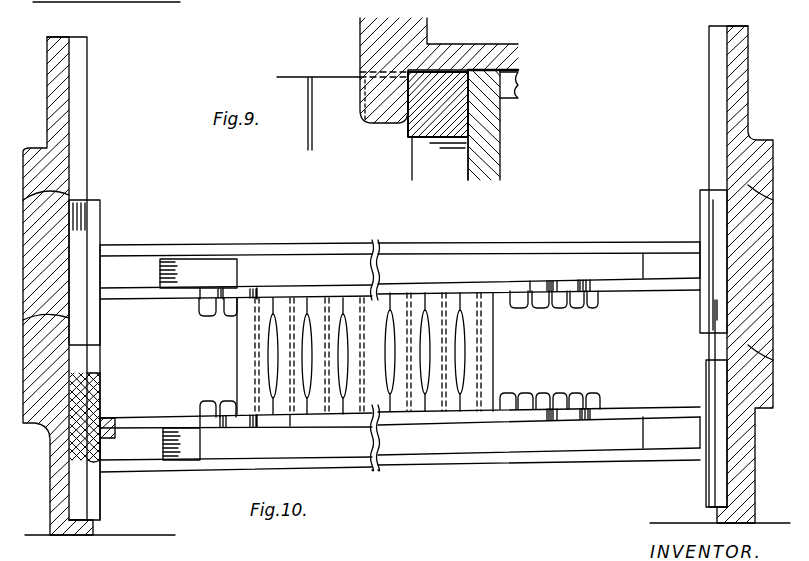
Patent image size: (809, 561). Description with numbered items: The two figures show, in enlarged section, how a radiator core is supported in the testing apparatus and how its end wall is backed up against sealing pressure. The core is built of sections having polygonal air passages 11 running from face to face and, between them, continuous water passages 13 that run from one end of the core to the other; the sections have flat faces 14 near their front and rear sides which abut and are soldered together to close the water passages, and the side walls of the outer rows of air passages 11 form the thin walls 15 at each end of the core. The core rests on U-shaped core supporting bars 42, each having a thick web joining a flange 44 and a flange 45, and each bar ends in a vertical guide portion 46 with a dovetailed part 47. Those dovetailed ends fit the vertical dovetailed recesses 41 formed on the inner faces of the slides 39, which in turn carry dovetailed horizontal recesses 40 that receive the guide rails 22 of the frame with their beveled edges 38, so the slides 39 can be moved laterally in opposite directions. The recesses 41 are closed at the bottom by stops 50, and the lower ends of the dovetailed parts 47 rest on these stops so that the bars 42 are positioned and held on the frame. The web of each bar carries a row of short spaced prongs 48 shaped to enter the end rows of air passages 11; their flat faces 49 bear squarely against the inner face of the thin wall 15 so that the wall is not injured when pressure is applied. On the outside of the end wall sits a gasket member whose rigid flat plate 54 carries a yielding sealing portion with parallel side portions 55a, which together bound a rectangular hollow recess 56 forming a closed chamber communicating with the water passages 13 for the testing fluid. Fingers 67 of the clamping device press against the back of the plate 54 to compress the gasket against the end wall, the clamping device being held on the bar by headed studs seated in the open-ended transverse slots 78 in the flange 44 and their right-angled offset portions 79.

In FIG. 9, the air passages 11 is at (339, 115).
In FIG. 10, the water passages 13 is at (307, 357).
In FIG. 10, the flat faces 14 is at (315, 300).
In FIG. 9, the thin walls 15 is at (412, 152).
In FIG. 10, the thin walls 15 is at (465, 422).
In FIG. 10, the guide rails 22 is at (85, 205).
In FIG. 10, the beveled edges 38 is at (72, 188).
In FIG. 10, the slides 39 is at (738, 68).
In FIG. 10, the dovetailed horizontal recesses 40 is at (35, 150).
In FIG. 10, the vertical dovetailed recesses 41 is at (85, 118).
In FIG. 10, the core supporting bars 42 is at (400, 260).
In FIG. 10, the flange 44 is at (470, 288).
In FIG. 10, the flange 45 is at (350, 478).
In FIG. 10, the vertical guide portion 46 is at (100, 222).
In FIG. 10, the dovetailed part 47 is at (77, 272).
In FIG. 9, the prongs 48 is at (377, 80).
In FIG. 10, the prongs 48 is at (545, 393).
In FIG. 9, the flat faces 49 is at (403, 100).
In FIG. 10, the flat faces 49 is at (227, 308).
In FIG. 10, the stops 50 is at (85, 515).
In FIG. 9, the rigid flat plate 54 is at (487, 115).
In FIG. 9, the parallel side portions 55a is at (453, 110).
In FIG. 9, the rectangular hollow recess 56 is at (447, 158).
In FIG. 9, the fingers 67 is at (518, 72).
In FIG. 10, the transverse slots 78 is at (67, 3).
In FIG. 10, the offset portion 79 is at (95, 3).